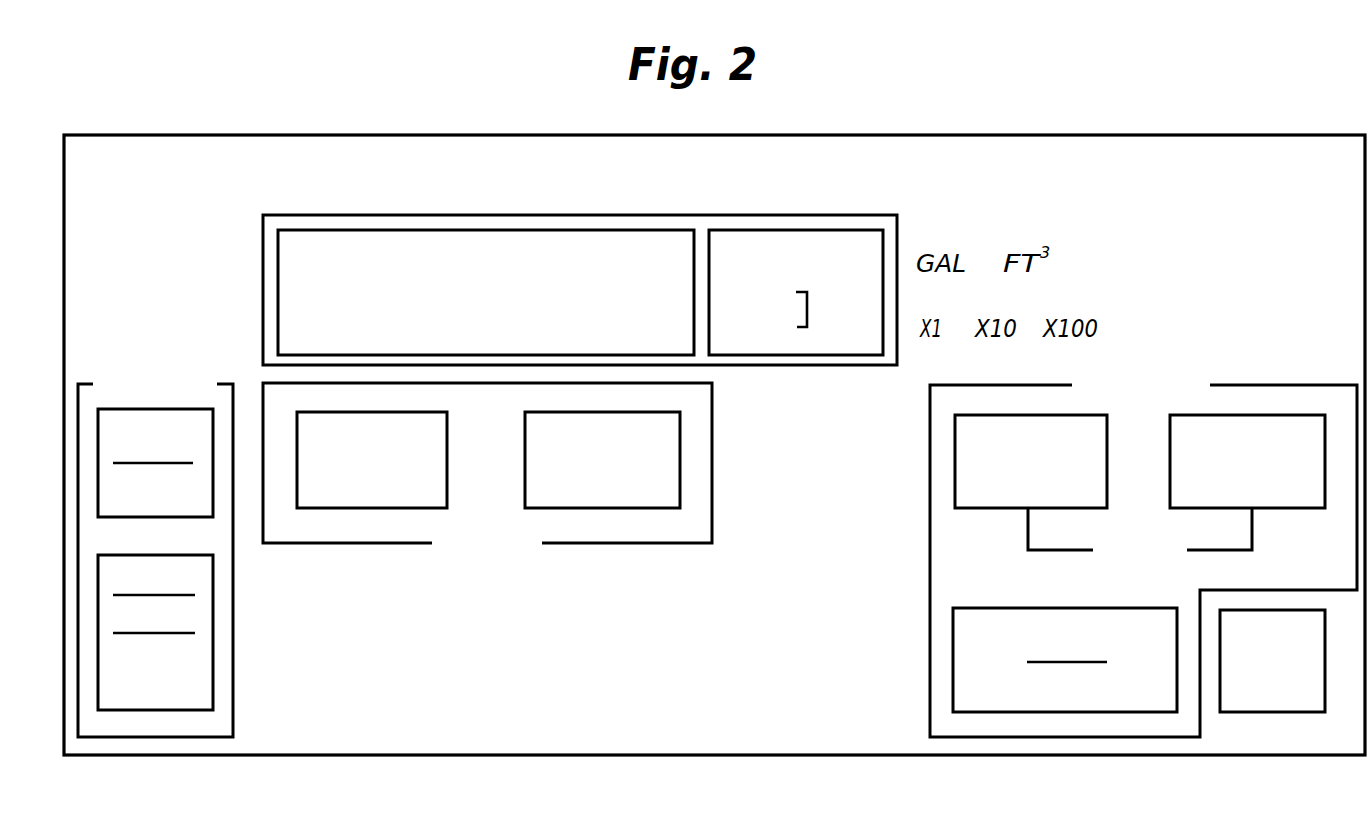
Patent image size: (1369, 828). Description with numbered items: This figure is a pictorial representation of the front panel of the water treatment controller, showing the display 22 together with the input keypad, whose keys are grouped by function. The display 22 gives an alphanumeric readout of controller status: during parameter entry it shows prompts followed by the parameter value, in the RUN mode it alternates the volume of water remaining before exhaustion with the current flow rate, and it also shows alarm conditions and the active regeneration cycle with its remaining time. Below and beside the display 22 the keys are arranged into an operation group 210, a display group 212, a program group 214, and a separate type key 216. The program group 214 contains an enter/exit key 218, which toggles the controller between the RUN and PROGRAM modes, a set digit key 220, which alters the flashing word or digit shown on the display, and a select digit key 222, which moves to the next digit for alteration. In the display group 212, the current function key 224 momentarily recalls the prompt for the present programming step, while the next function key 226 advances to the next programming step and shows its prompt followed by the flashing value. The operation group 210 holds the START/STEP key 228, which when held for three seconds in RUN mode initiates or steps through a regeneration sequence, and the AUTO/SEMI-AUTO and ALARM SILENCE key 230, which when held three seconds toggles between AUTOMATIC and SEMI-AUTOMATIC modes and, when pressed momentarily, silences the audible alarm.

The display 22 is at (478, 240).
The operation group 210 is at (208, 553).
The display group 212 is at (487, 505).
The program group 214 is at (1143, 528).
The type key 216 is at (1300, 712).
The enter/exit key 218 is at (1002, 608).
The set digit key 220 is at (1018, 358).
The select digit key 222 is at (1280, 357).
The current function key 224 is at (358, 508).
The next function key 226 is at (602, 476).
The START/STEP key 228 is at (200, 517).
The AUTO/SEMI-AUTO and ALARM SILENCE key 230 is at (213, 593).